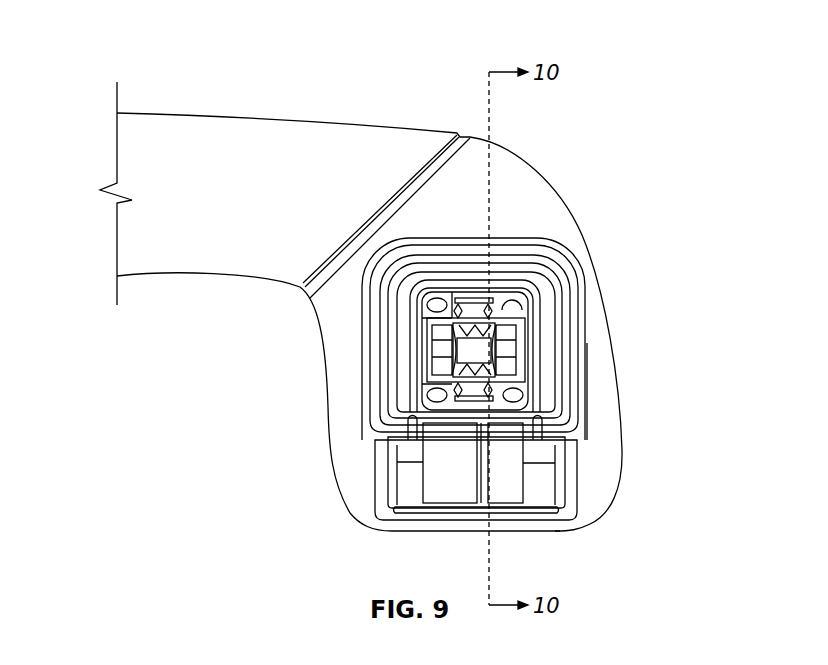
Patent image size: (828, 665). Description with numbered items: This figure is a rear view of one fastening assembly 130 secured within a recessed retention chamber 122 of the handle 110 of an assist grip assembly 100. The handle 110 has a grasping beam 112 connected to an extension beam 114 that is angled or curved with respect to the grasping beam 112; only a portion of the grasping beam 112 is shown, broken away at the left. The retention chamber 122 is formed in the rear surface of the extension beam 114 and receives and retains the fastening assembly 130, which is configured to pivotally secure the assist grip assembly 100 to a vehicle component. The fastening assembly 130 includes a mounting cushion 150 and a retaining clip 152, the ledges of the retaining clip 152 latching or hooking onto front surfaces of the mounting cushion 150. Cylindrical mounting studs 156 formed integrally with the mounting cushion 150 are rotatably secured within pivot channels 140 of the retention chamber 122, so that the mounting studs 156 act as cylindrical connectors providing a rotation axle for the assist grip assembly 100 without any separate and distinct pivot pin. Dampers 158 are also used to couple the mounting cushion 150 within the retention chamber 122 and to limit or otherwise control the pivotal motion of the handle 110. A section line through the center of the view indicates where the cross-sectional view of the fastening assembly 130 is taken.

The assist grip assembly 100 is at (173, 62).
The handle 110 is at (222, 113).
The grasping beam 112 is at (290, 116).
The extension beam 114 is at (619, 408).
The retention chamber 122 is at (515, 248).
The fastening assembly 130 is at (532, 293).
The mounting cushion 150 is at (378, 328).
The retaining clip 152 is at (505, 335).
The mounting stud 156 is at (408, 465).
The pivot channel 140 is at (377, 513).
The damper 158 is at (453, 490).